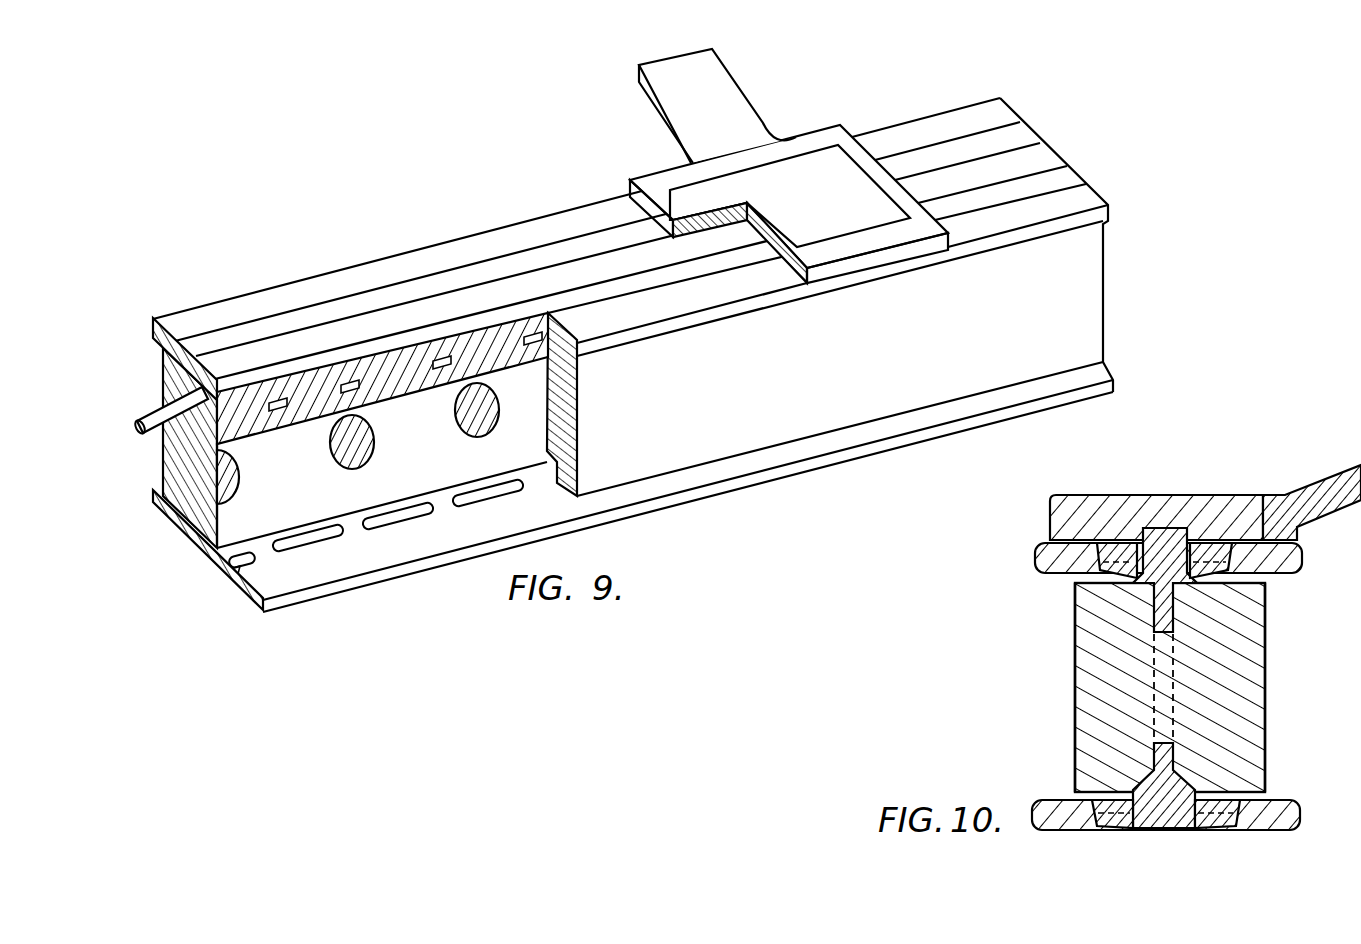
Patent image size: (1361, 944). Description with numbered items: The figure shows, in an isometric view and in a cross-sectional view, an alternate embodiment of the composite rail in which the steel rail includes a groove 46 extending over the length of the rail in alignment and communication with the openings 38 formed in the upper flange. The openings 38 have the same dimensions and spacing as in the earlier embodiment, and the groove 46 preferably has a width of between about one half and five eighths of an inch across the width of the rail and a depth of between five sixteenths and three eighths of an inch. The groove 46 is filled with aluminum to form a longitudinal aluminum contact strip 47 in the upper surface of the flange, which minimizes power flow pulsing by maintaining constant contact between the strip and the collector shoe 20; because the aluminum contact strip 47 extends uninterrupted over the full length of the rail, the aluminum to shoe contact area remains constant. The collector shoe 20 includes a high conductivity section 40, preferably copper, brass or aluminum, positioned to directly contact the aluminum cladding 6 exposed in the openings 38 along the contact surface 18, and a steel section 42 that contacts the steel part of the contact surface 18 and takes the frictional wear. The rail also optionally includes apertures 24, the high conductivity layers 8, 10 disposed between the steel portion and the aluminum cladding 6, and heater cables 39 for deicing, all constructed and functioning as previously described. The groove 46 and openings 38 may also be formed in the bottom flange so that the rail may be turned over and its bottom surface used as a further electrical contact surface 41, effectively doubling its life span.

In FIG. 9, the aluminum cladding 6 is at (163, 472).
In FIG. 10, the aluminum cladding 6 is at (1253, 665).
In FIG. 10, the high conductivity layer 8 is at (1085, 584).
In FIG. 10, the high conductivity layer 10 is at (1252, 583).
In FIG. 9, the contact surface 18 is at (490, 243).
In FIG. 9, the collector shoe 20 is at (734, 123).
In FIG. 10, the collector shoe 20 is at (1312, 493).
In FIG. 9, the apertures 24 is at (372, 442).
In FIG. 10, the apertures 24 is at (1153, 670).
In FIG. 9, the openings 38 is at (386, 362).
In FIG. 10, the openings 38 is at (1218, 563).
In FIG. 9, the heater cable 39 is at (163, 412).
In FIG. 9, the high conductivity section 40 is at (750, 178).
In FIG. 10, the high conductivity section 40 is at (1113, 540).
In FIG. 9, the further electrical contact surface 41 is at (250, 592).
In FIG. 10, the further electrical contact surface 41 is at (1060, 832).
In FIG. 10, the steel section 42 is at (1050, 498).
In FIG. 9, the groove 46 is at (158, 318).
In FIG. 10, the groove 46 is at (1230, 826).
In FIG. 9, the aluminum contact strip 47 is at (928, 155).
In FIG. 10, the aluminum contact strip 47 is at (1120, 565).